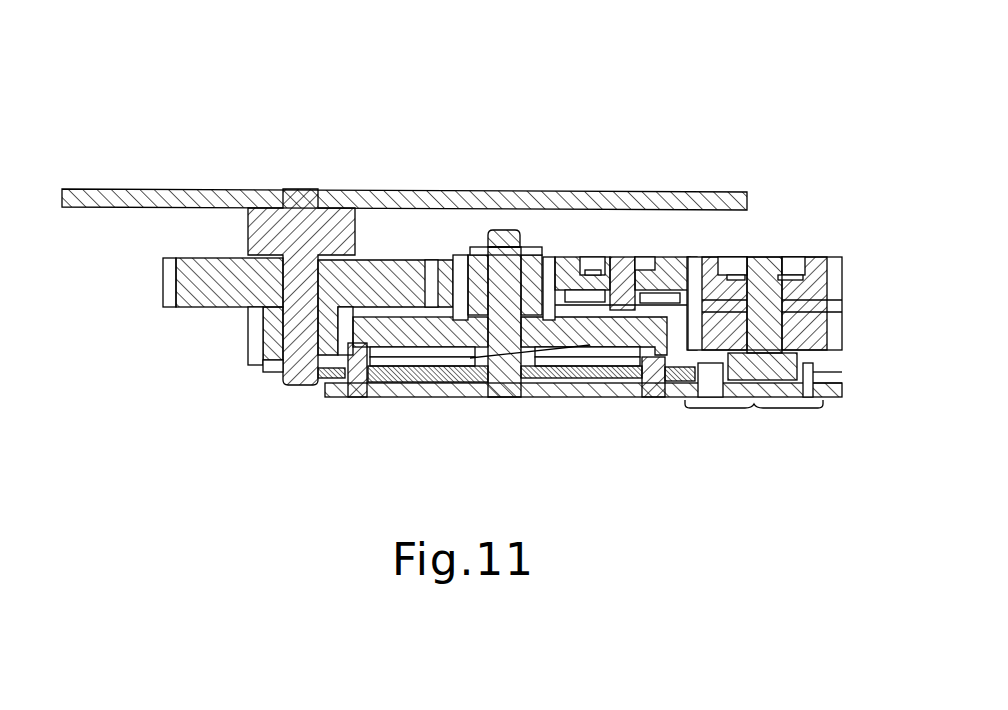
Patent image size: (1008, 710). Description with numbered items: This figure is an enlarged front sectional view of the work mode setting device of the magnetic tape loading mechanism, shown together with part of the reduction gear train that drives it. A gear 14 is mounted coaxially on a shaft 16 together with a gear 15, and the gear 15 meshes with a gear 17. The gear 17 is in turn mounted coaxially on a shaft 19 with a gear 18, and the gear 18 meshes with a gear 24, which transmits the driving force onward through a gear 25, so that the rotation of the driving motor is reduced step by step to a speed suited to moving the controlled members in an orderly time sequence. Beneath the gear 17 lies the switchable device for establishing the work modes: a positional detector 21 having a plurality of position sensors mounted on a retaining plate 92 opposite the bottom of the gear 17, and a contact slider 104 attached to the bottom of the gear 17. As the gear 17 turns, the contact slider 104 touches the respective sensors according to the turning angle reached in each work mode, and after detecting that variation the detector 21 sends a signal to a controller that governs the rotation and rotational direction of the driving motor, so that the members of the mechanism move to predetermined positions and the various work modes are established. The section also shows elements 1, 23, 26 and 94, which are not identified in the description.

The top plate 1 is at (157, 190).
The gear 14 is at (207, 280).
The gear 15 is at (272, 320).
The shaft 16 is at (255, 215).
The gear 17 is at (455, 398).
The gear 18 is at (450, 256).
The shaft 19 is at (500, 238).
The positional detector 21 is at (378, 398).
The side block 23 is at (670, 262).
The gear 24 is at (626, 262).
The gear 25 is at (830, 285).
The pin 26 is at (780, 256).
The retaining plate 92 is at (408, 398).
The block 94 is at (566, 257).
The contact slider 104 is at (541, 398).